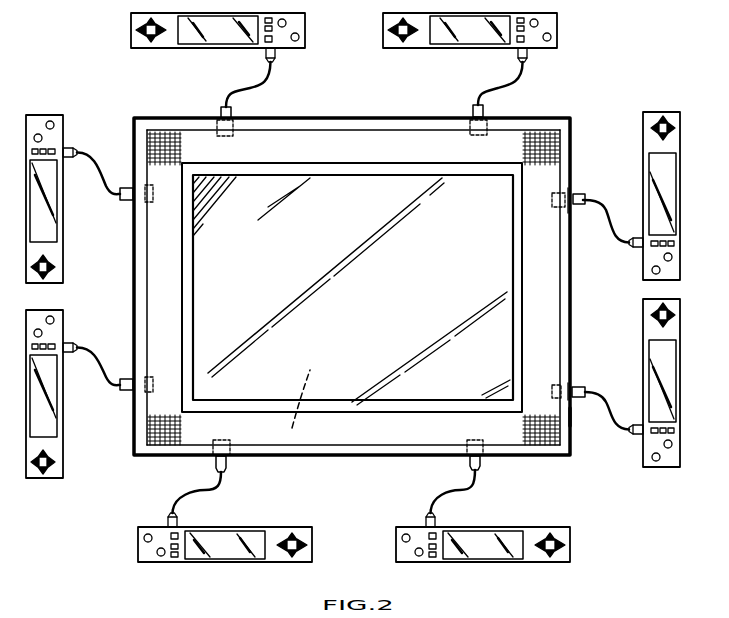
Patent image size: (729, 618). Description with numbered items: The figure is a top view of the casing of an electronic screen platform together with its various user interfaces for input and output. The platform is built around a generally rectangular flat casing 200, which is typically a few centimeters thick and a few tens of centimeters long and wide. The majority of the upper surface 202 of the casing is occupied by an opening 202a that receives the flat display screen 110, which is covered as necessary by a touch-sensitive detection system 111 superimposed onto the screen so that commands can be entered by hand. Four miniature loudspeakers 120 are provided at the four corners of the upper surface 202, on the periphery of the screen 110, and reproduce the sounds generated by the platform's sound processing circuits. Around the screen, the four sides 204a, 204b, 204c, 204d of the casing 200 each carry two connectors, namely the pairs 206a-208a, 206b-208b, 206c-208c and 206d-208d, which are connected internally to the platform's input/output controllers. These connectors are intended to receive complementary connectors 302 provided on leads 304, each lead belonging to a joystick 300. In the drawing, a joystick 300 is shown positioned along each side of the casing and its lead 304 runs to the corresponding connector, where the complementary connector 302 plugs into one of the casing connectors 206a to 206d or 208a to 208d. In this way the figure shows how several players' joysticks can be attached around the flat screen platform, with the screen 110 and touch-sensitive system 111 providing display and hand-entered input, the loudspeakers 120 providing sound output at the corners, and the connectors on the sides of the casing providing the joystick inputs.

The flat display screen 110 is at (374, 387).
The touch-sensitive detection system 111 is at (286, 404).
The miniature loudspeaker 120 is at (153, 132).
The casing 200 is at (342, 115).
The upper surface of the casing 202 is at (409, 140).
The opening 202a is at (504, 320).
The side of the casing 204a is at (202, 116).
The side of the casing 204b is at (572, 284).
The side of the casing 204c is at (363, 458).
The side of the casing 204d is at (130, 310).
The connector 206a is at (487, 114).
The connector 206b is at (573, 417).
The connector 206c is at (227, 460).
The connector 206d is at (136, 204).
The connector 208a is at (233, 110).
The connector 208b is at (568, 188).
The connector 208c is at (478, 452).
The connector 208d is at (133, 404).
The joystick 300 is at (668, 468).
The complementary connector 302 is at (582, 380).
The lead 304 is at (622, 437).